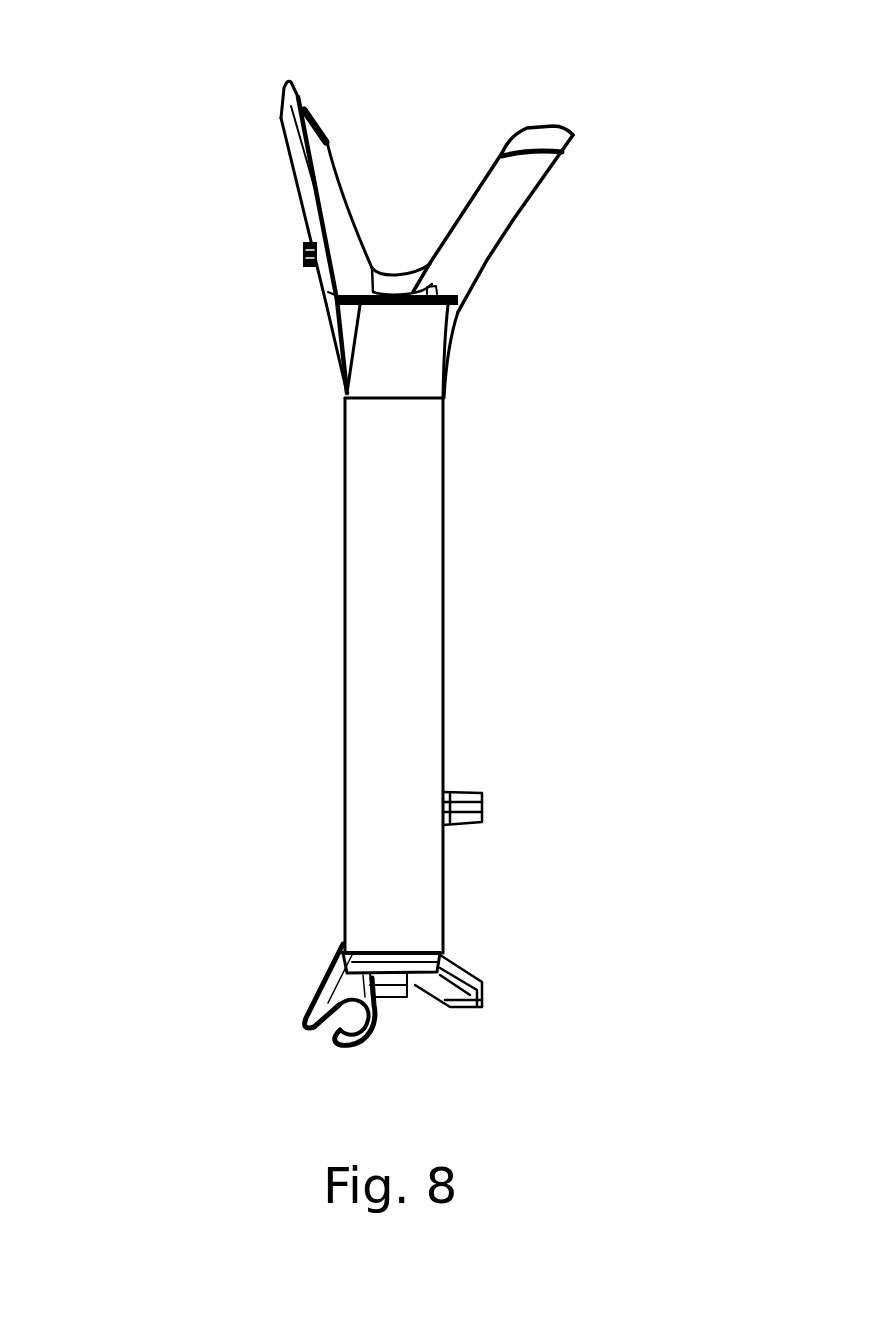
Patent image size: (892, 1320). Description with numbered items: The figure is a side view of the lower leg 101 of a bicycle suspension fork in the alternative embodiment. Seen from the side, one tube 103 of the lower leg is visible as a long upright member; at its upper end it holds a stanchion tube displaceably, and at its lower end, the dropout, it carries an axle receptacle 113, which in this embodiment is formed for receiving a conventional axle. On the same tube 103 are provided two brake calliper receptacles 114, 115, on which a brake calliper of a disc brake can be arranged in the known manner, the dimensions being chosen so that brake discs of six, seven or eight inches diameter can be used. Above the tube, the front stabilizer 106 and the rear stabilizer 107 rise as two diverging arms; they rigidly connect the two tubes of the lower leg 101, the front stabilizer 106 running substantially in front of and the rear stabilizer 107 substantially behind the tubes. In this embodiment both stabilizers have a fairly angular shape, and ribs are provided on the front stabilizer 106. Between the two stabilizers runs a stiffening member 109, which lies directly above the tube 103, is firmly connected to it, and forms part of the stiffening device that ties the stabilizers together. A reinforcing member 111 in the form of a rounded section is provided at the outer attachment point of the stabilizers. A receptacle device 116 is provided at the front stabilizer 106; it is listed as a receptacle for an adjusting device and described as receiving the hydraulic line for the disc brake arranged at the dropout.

The lower leg 101 is at (240, 601).
The tube 103 is at (402, 632).
The front stabilizer 106 is at (328, 187).
The rear stabilizer 107 is at (495, 197).
The stiffening member 109 is at (400, 282).
The reinforcing member 111 is at (336, 287).
The axle receptacle 113 is at (318, 985).
The brake calliper receptacle 114 is at (483, 823).
The brake calliper receptacle 115 is at (483, 1007).
The receptacle device 116 is at (302, 250).